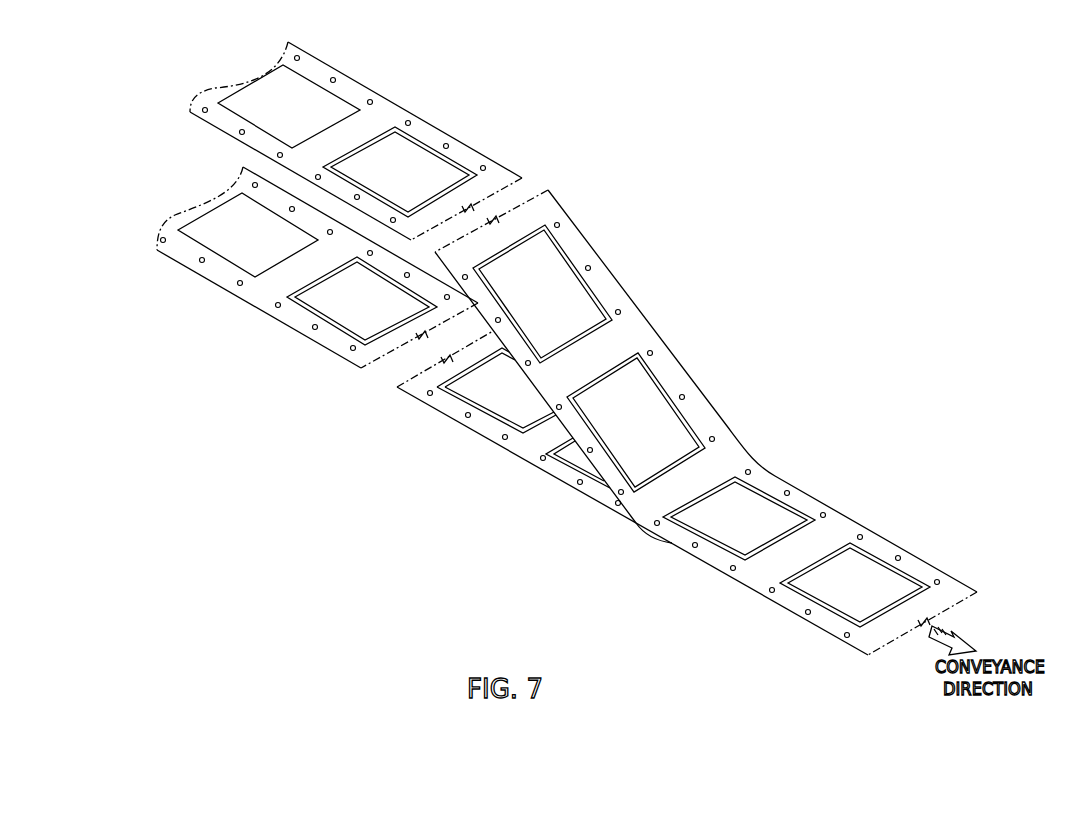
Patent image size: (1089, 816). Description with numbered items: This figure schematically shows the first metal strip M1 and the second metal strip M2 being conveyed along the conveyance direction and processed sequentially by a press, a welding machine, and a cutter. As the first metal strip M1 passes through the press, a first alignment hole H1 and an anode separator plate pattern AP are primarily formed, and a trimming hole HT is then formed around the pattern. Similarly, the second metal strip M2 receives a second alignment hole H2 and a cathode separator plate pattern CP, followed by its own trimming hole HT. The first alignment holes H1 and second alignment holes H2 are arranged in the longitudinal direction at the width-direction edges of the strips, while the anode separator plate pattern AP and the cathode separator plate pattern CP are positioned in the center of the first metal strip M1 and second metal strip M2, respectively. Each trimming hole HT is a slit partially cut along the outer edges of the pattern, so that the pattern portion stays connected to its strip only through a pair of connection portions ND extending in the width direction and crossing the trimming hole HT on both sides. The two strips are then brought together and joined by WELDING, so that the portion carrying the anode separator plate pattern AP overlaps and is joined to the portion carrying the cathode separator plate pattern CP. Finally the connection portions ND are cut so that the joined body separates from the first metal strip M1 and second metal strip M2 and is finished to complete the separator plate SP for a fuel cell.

The first metal strip M1 is at (393, 94).
The second metal strip M2 is at (162, 257).
The anode separator plate pattern AP is at (312, 118).
The cathode separator plate pattern CP is at (240, 237).
The trimming hole HT is at (430, 125).
The first alignment hole H1 is at (486, 167).
The second alignment hole H2 is at (272, 304).
The connection portion ND is at (452, 147).
The separator plate SP is at (863, 582).
The welding WELDING is at (683, 549).